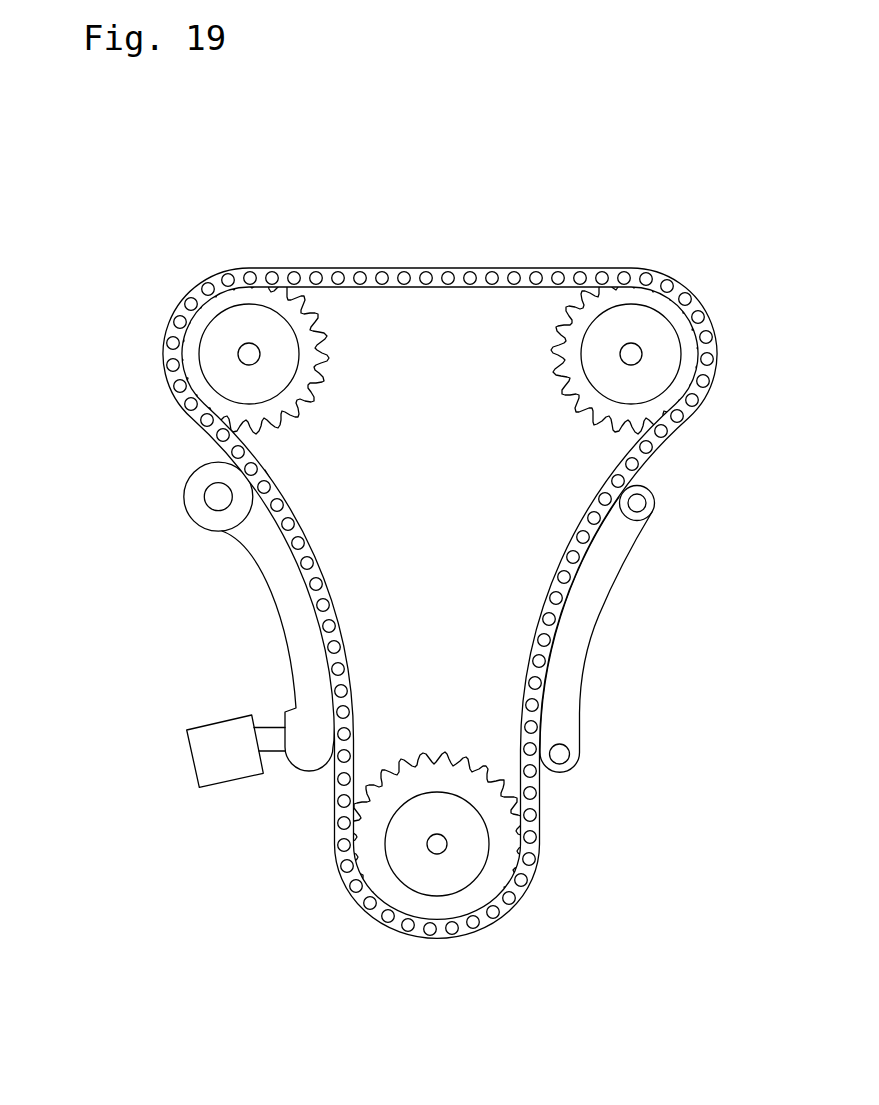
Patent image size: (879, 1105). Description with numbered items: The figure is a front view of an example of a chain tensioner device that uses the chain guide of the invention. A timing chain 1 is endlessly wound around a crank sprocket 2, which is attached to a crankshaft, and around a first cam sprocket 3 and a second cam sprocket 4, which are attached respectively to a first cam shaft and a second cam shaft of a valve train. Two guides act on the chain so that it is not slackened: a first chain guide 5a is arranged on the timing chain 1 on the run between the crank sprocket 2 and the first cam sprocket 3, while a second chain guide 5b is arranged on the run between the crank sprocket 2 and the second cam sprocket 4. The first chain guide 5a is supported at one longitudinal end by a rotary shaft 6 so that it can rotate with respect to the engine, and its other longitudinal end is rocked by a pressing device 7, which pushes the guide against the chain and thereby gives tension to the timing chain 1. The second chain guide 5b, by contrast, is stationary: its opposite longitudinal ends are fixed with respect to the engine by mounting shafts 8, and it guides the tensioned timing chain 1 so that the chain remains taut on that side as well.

The timing chain 1 is at (472, 268).
The crank sprocket 2 is at (457, 857).
The first cam sprocket 3 is at (230, 332).
The second cam sprocket 4 is at (647, 327).
The first chain guide 5a is at (262, 560).
The second chain guide 5b is at (582, 604).
The rotary shaft 6 is at (210, 498).
The pressing device 7 is at (218, 747).
The mounting shafts 8 is at (645, 502).